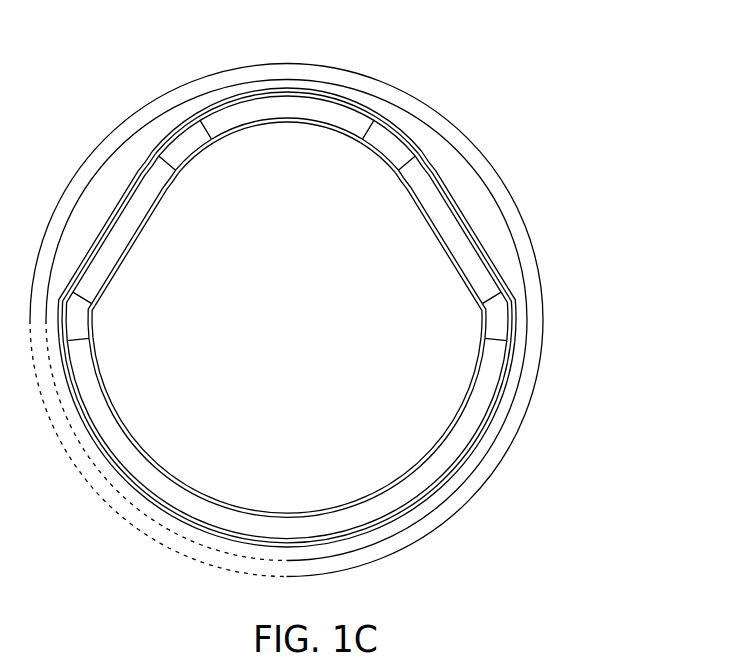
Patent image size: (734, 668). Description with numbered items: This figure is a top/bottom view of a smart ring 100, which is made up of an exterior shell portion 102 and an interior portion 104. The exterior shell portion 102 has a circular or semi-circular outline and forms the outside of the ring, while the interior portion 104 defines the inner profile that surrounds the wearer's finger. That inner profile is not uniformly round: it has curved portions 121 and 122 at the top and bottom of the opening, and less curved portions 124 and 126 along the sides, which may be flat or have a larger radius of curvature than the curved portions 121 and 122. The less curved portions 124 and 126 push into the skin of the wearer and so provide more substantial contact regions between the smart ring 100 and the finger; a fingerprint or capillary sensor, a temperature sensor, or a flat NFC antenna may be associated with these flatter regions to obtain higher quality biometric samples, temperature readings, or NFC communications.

The smart ring 100 is at (297, 288).
The exterior shell portion 102 is at (170, 92).
The interior portion 104 is at (322, 328).
The curved portion 121 is at (299, 147).
The curved portion 122 is at (297, 495).
The less curved portion 124 is at (411, 230).
The less curved portion 126 is at (175, 226).